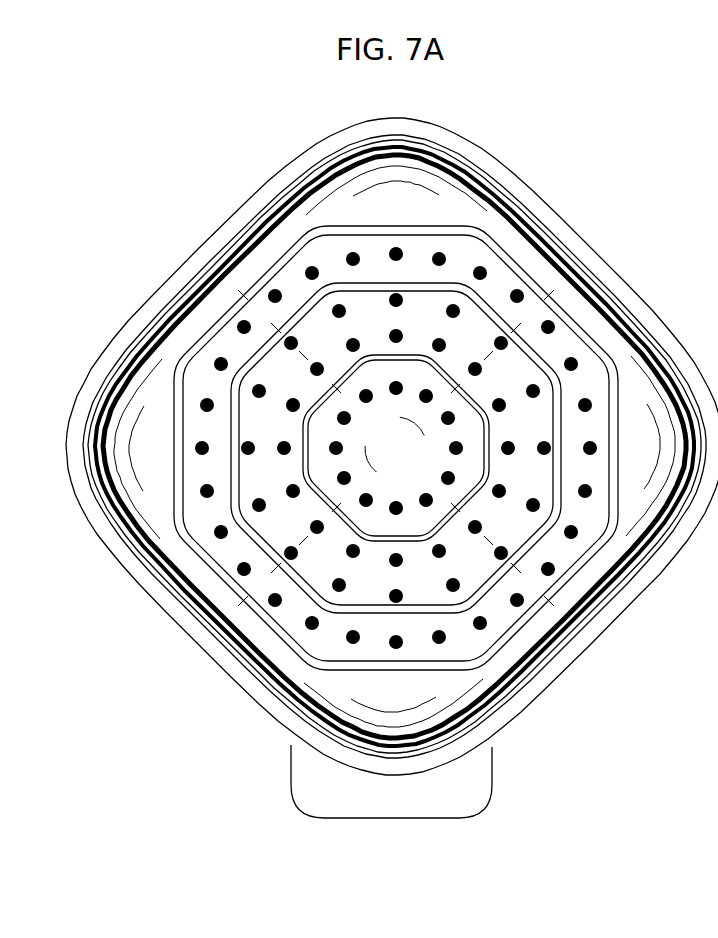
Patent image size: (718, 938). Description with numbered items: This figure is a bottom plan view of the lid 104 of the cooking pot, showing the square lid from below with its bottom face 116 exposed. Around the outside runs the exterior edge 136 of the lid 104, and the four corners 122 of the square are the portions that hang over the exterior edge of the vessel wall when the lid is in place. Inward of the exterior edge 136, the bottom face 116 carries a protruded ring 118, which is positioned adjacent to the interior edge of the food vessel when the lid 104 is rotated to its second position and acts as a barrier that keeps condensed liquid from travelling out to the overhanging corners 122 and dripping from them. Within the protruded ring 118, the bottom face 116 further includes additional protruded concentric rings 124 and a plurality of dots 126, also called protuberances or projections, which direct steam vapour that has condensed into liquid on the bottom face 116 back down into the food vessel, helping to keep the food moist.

The lid 104 is at (598, 133).
The bottom face 116 is at (161, 374).
The protruded ring 118 is at (620, 378).
The corners 122 is at (391, 799).
The protruded concentric rings 124 is at (332, 606).
The dots 126 is at (462, 308).
The exterior edge 136 is at (160, 612).